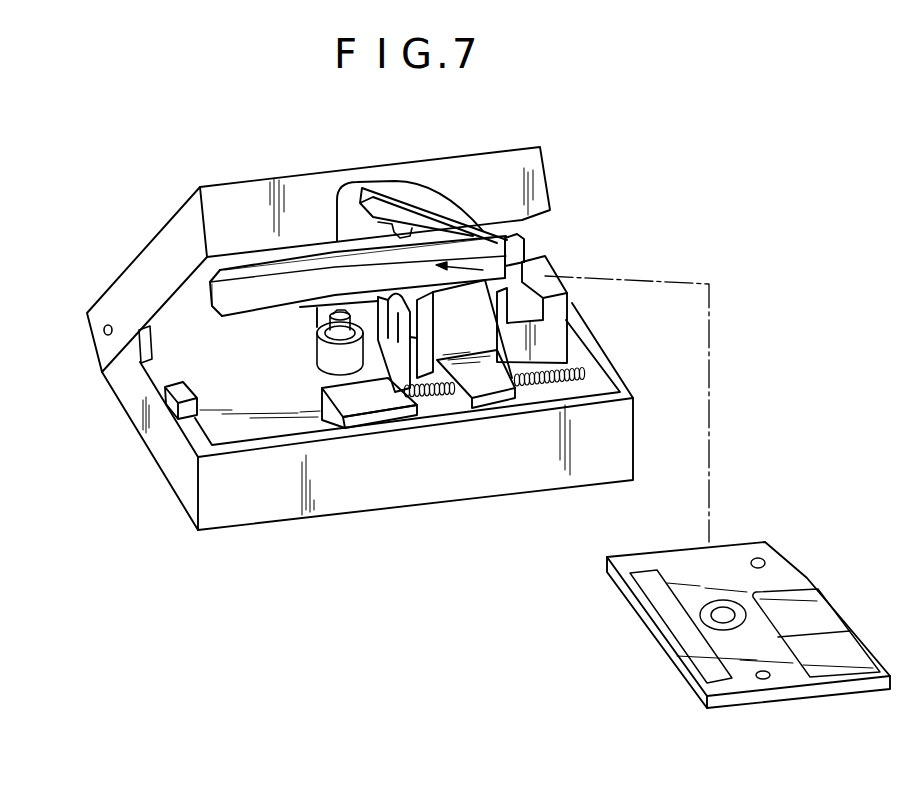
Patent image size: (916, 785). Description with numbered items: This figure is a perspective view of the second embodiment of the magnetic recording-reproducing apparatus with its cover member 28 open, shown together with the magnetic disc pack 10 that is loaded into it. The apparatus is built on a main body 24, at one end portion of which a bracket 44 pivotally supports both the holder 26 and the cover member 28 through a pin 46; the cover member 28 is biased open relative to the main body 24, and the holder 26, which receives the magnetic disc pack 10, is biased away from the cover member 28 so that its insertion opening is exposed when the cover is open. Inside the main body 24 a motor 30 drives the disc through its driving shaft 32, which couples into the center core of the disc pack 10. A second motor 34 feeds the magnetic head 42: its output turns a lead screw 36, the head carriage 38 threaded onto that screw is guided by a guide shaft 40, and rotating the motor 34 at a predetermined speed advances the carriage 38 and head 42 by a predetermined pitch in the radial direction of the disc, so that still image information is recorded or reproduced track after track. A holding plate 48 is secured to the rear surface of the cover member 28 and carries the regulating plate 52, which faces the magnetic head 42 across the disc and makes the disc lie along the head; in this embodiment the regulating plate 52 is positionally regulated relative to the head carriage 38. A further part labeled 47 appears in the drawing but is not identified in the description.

The magnetic disc pack 10 is at (780, 575).
The main body 24 is at (276, 503).
The holder 26 is at (226, 314).
The cover member 28 is at (546, 175).
The motor 30 is at (328, 355).
The driving shaft 32 is at (318, 337).
The motor 34 is at (363, 397).
The lead screw 36 is at (427, 400).
The head carriage 38 is at (493, 388).
The guide shaft 40 is at (365, 312).
The magnetic head 42 is at (388, 396).
The bracket 44 is at (142, 352).
The pin 46 is at (103, 340).
The arm top surface 47 is at (248, 293).
The holding plate 48 is at (463, 228).
The regulating plate 52 is at (421, 233).